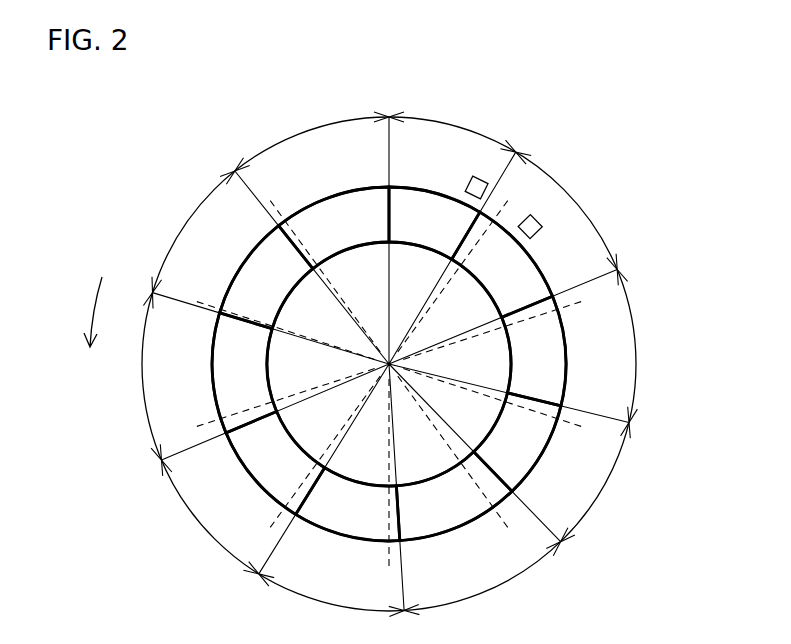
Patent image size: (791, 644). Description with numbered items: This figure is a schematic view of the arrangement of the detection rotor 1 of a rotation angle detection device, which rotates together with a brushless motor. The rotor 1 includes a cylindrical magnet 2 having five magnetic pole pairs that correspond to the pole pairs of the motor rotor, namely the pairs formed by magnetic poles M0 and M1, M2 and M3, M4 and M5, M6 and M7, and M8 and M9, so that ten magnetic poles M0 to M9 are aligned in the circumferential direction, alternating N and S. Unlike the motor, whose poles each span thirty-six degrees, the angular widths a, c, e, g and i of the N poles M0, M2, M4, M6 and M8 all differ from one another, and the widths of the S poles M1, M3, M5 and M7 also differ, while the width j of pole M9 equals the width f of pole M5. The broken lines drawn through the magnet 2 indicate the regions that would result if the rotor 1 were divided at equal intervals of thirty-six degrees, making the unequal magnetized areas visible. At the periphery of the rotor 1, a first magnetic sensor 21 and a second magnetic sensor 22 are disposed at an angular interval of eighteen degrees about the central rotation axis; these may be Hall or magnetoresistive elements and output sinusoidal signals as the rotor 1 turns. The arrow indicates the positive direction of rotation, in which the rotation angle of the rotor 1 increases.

The detection rotor 1 is at (231, 114).
The cylindrical magnet 2 is at (307, 207).
The first magnetic sensor 21 is at (480, 177).
The second magnetic sensor 22 is at (535, 217).
The magnetic pole M0 is at (405, 198).
The magnetic pole M1 is at (540, 283).
The magnetic pole M2 is at (563, 331).
The magnetic pole M3 is at (530, 458).
The magnetic pole M4 is at (447, 523).
The magnetic pole M5 is at (342, 530).
The magnetic pole M6 is at (242, 462).
The magnetic pole M7 is at (217, 355).
The magnetic pole M8 is at (247, 287).
The magnetic pole M9 is at (360, 200).